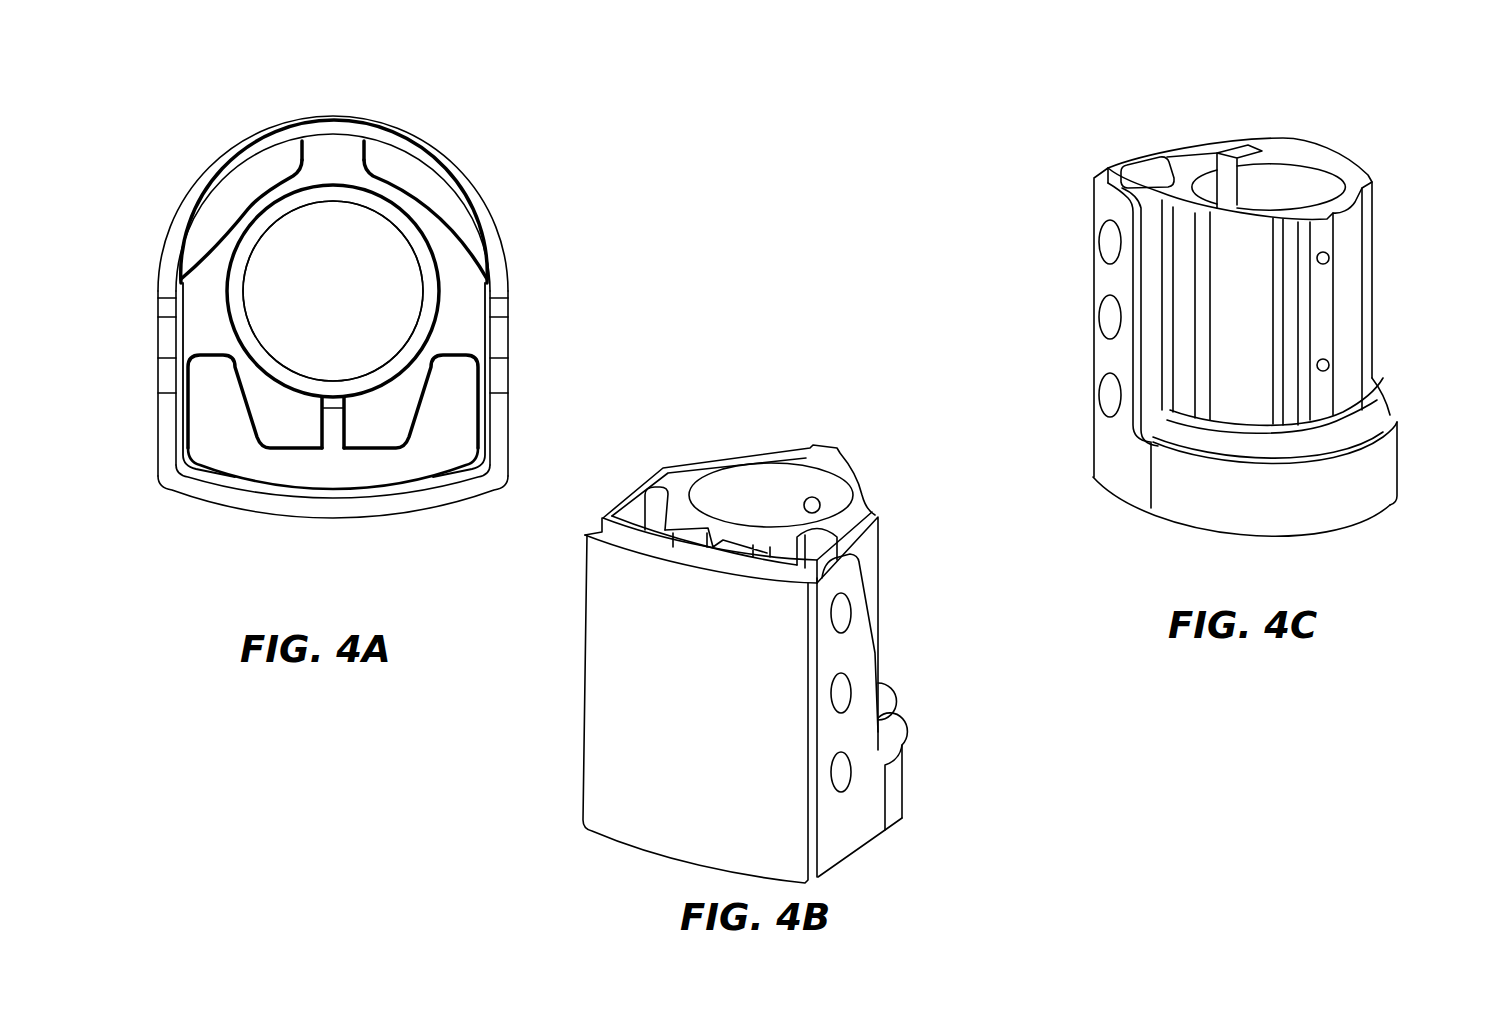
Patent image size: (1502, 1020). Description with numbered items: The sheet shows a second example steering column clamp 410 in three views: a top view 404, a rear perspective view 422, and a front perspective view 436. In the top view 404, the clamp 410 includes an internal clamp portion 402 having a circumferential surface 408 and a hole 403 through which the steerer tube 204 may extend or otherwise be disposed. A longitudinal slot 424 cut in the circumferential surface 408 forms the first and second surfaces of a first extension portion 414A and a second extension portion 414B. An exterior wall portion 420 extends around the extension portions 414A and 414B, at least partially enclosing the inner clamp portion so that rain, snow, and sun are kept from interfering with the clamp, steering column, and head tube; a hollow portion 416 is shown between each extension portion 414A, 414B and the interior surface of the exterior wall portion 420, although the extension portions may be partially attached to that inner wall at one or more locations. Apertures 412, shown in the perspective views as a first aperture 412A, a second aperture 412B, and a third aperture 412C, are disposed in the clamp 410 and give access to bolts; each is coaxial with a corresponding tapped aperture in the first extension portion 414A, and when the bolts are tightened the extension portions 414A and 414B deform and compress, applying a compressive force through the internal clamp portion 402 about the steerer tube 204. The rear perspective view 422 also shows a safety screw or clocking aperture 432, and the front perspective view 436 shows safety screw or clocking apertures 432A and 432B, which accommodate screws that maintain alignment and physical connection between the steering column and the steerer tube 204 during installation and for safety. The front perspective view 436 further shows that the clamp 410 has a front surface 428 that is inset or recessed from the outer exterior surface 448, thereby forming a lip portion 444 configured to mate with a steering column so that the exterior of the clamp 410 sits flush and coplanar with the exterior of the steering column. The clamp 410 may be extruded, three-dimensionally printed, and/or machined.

In FIG. 4A, the steerer tube 204 is at (431, 302).
In FIG. 4A, the internal clamp portion 402 is at (327, 347).
In FIG. 4A, the hole 403 is at (370, 252).
In FIG. 4A, the top view 404 is at (532, 133).
In FIG. 4A, the circumferential surface 408 is at (441, 270).
In FIG. 4A, the steering column clamp 410 is at (193, 183).
In FIG. 4A, the aperture 412 is at (507, 416).
In FIG. 4B, the first aperture 412A is at (840, 772).
In FIG. 4C, the first aperture 412A is at (1108, 395).
In FIG. 4B, the second aperture 412B is at (840, 697).
In FIG. 4C, the second aperture 412B is at (1108, 317).
In FIG. 4B, the third aperture 412C is at (848, 612).
In FIG. 4C, the third aperture 412C is at (1108, 240).
In FIG. 4A, the first extension portion 414A is at (295, 438).
In FIG. 4A, the second extension portion 414B is at (393, 440).
In FIG. 4A, the hollow portion 416 is at (468, 449).
In FIG. 4C, the hollow portion 416 is at (1150, 180).
In FIG. 4A, the exterior wall portion 420 is at (232, 505).
In FIG. 4B, the exterior wall portion 420 is at (590, 793).
In FIG. 4B, the rear perspective view 422 is at (918, 463).
In FIG. 4A, the longitudinal slot 424 is at (333, 442).
In FIG. 4B, the longitudinal slot 424 is at (715, 547).
In FIG. 4B, the front surface 428 is at (876, 638).
In FIG. 4B, the safety screw or clocking aperture 432 is at (815, 498).
In FIG. 4C, the safety screw or clocking aperture 432A is at (1330, 368).
In FIG. 4C, the safety screw or clocking aperture 432B is at (1330, 262).
In FIG. 4C, the front perspective view 436 is at (1378, 117).
In FIG. 4C, the lip portion 444 is at (1290, 466).
In FIG. 4C, the exterior surface 448 is at (1227, 507).